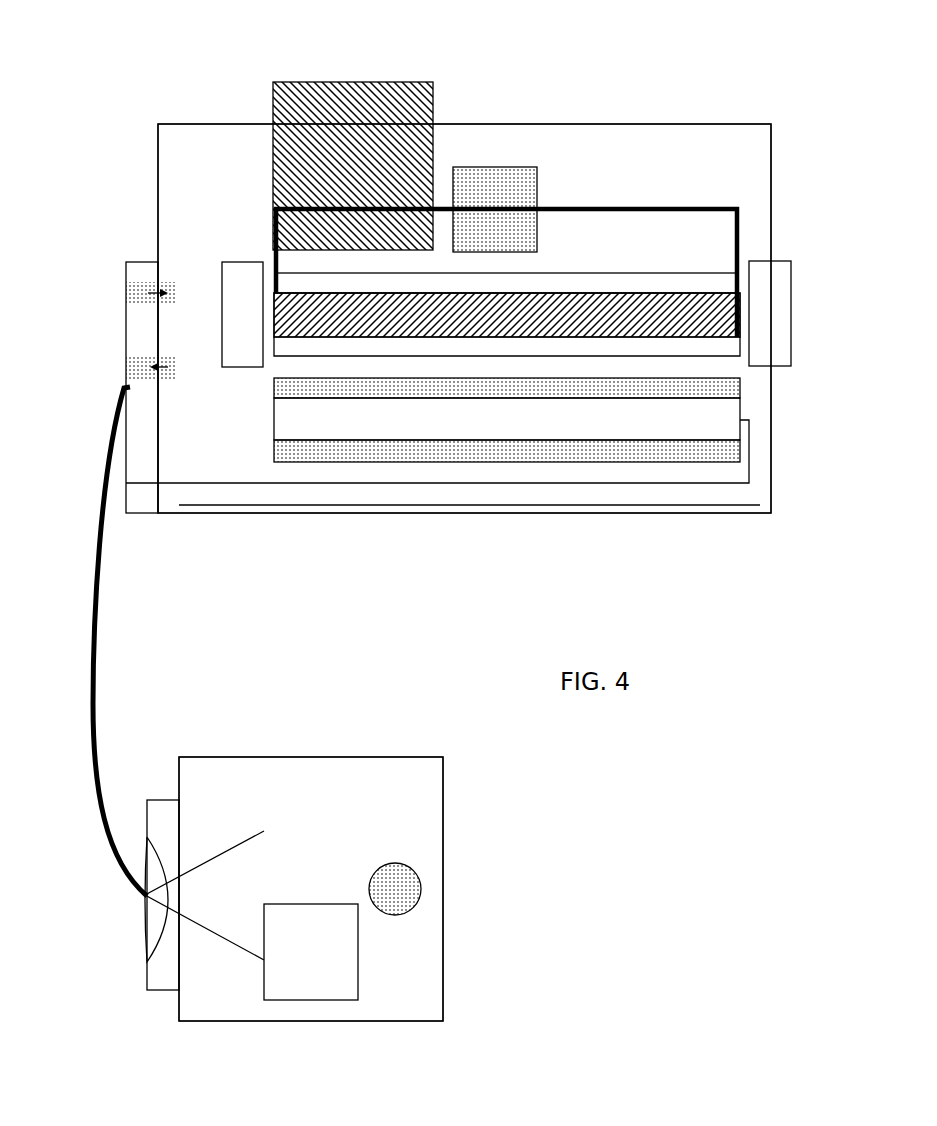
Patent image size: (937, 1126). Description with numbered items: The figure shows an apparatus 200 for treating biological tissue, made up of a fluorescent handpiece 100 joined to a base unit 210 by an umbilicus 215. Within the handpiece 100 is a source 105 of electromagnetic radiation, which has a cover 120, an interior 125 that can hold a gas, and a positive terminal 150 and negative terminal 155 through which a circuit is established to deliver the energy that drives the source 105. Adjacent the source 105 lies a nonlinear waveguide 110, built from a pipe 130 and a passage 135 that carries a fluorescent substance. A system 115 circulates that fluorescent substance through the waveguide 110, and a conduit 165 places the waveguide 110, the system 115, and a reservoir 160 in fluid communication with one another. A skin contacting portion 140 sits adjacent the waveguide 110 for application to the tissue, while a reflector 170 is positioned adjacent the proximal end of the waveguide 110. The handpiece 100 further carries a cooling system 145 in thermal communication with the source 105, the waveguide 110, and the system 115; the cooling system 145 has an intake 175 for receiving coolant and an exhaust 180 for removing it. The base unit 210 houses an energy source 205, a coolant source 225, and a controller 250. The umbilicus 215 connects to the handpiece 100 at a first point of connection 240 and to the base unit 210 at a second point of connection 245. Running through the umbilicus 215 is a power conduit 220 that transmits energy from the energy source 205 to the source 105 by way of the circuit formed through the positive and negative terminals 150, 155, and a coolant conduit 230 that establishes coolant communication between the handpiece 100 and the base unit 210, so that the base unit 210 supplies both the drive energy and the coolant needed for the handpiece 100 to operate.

The fluorescent handpiece 100 is at (736, 530).
The source of electromagnetic radiation 105 is at (494, 465).
The nonlinear waveguide 110 is at (592, 273).
The system for circulating a fluorescent substance 115 is at (480, 167).
The cover 120 is at (582, 450).
The interior 125 is at (665, 425).
The pipe 130 is at (663, 280).
The passage 135 is at (716, 300).
The skin contacting portion 140 is at (785, 260).
The cooling system 145 is at (337, 503).
The positive terminal 150 is at (274, 420).
The negative terminal 155 is at (126, 483).
The reservoir 160 is at (353, 82).
The conduit 165 is at (543, 273).
The reflector 170 is at (230, 262).
The intake 175 is at (137, 296).
The exhaust 180 is at (137, 370).
The apparatus 200 is at (657, 780).
The energy source 205 is at (358, 975).
The base unit 210 is at (443, 942).
The umbilicus 215 is at (100, 623).
The power conduit 220 is at (150, 960).
The coolant source 225 is at (358, 810).
The coolant conduit 230 is at (153, 841).
The first point of connection 240 is at (126, 262).
The second point of connection 245 is at (145, 935).
The controller 250 is at (421, 889).